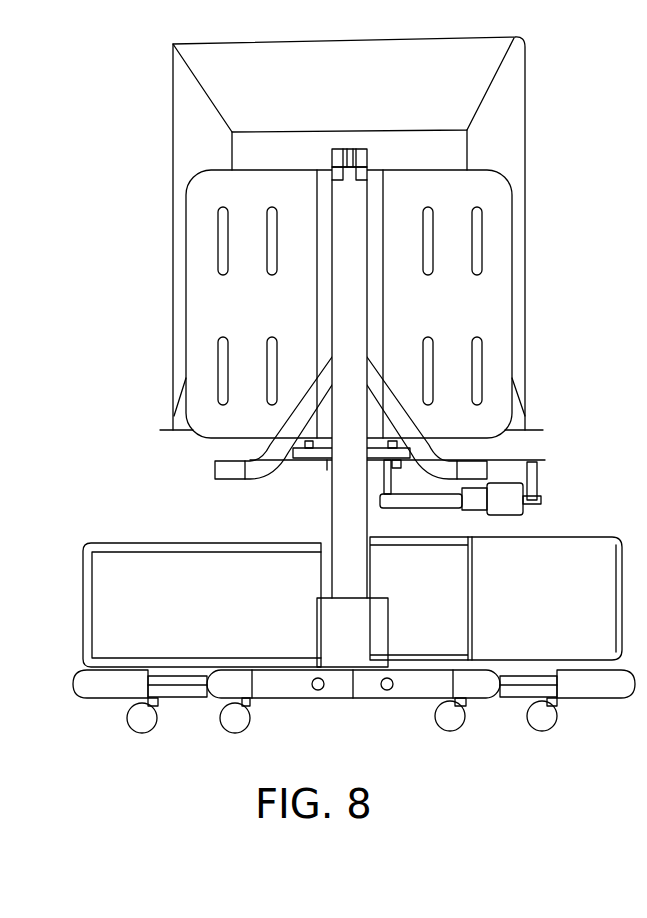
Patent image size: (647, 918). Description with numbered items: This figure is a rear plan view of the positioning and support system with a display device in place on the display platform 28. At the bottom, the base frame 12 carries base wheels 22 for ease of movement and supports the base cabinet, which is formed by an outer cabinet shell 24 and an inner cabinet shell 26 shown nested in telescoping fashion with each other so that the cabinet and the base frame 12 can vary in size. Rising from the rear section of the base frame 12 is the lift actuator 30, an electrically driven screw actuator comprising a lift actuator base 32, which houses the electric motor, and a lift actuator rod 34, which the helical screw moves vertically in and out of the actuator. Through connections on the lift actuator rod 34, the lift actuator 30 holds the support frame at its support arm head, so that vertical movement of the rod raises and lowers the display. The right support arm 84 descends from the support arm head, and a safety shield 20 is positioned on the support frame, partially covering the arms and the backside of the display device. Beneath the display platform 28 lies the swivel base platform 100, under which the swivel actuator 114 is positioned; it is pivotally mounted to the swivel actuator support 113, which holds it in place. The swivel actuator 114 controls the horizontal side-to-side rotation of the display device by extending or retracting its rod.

The base frame 12 is at (290, 684).
The safety shield 20 is at (438, 322).
The base wheels 22 is at (235, 723).
The outer cabinet shell 24 is at (178, 622).
The inner cabinet shell 26 is at (531, 624).
The display platform 28 is at (530, 428).
The lift actuator 30 is at (338, 322).
The lift actuator base 32 is at (340, 642).
The lift actuator rod 34 is at (343, 173).
The right support arm 84 is at (253, 472).
The swivel base platform 100 is at (518, 459).
The swivel actuator support 113 is at (538, 478).
The swivel actuator 114 is at (513, 508).